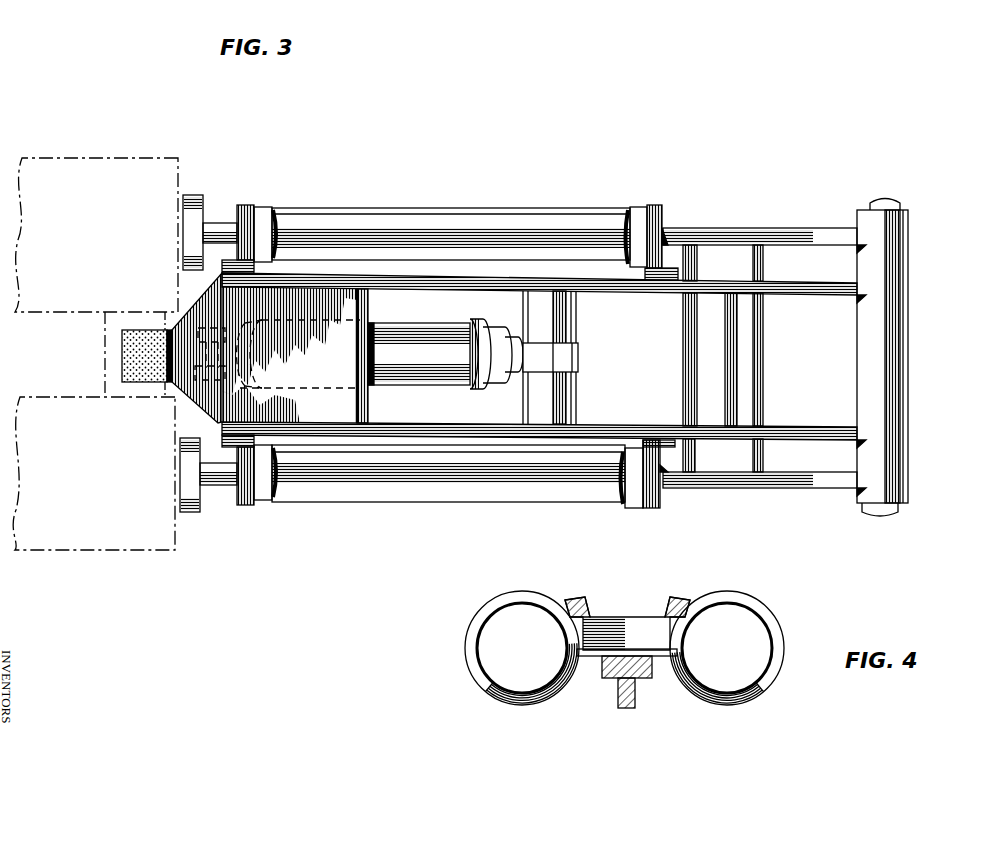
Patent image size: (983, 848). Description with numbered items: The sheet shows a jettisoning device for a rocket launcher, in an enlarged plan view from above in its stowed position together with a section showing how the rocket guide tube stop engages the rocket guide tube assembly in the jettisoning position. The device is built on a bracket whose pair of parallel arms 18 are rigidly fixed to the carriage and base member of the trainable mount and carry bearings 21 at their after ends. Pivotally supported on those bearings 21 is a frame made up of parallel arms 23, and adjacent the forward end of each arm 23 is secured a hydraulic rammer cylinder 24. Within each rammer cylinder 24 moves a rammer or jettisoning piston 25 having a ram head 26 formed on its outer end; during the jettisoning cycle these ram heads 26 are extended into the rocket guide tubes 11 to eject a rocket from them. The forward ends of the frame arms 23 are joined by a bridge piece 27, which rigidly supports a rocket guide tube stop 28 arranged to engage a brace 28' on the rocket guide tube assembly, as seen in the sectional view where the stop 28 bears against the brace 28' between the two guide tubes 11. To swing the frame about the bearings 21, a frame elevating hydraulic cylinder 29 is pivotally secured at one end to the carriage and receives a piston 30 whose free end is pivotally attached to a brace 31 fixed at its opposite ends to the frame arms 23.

In FIG. 3, the rocket guide tubes 11 is at (152, 155).
In FIG. 4, the rocket guide tubes 11 is at (492, 697).
In FIG. 3, the parallel arms 18 is at (807, 237).
In FIG. 3, the bearings 21 is at (907, 222).
In FIG. 3, the parallel arms 23 is at (795, 291).
In FIG. 3, the hydraulic rammer cylinder 24 is at (433, 218).
In FIG. 3, the rammer or jettisoning piston 25 is at (222, 222).
In FIG. 3, the ram head 26 is at (200, 198).
In FIG. 3, the bridge piece 27 is at (203, 312).
In FIG. 3, the rocket guide tube stop 28 is at (135, 335).
In FIG. 4, the rocket guide tube stop 28 is at (639, 682).
In FIG. 3, the brace 28' is at (103, 354).
In FIG. 4, the brace 28' is at (627, 620).
In FIG. 3, the frame elevating hydraulic cylinder 29 is at (418, 330).
In FIG. 3, the piston 30 is at (517, 345).
In FIG. 3, the brace 31 is at (560, 340).